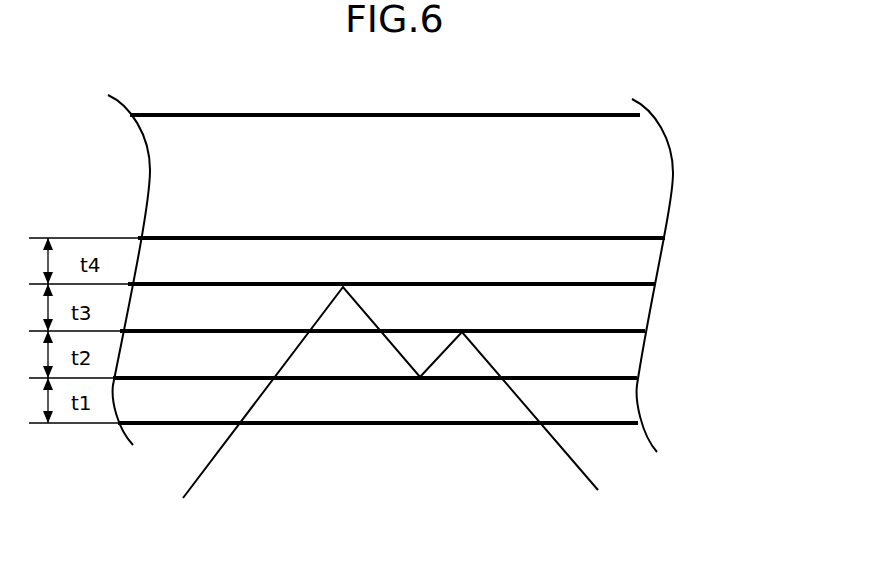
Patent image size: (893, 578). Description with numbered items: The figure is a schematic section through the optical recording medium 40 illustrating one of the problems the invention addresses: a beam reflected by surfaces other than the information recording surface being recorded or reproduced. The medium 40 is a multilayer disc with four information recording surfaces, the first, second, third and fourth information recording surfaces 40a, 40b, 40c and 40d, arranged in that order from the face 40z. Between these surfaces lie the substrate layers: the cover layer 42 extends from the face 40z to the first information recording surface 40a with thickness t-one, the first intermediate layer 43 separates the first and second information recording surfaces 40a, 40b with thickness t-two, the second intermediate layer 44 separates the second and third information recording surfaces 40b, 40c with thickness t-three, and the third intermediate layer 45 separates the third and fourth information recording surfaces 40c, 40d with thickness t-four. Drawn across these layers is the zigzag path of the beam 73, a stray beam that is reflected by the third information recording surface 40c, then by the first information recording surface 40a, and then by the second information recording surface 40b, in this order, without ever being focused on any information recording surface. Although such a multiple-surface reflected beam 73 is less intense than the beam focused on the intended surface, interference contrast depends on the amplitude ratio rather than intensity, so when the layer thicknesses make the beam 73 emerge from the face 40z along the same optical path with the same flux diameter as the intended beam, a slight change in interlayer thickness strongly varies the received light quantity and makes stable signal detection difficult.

The optical recording medium 40 is at (636, 91).
The fourth information recording surface 40d is at (665, 238).
The third information recording surface 40c is at (655, 284).
The second information recording surface 40b is at (645, 331).
The first information recording surface 40a is at (637, 378).
The face 40z is at (638, 423).
The third intermediate layer 45 is at (605, 259).
The second intermediate layer 44 is at (605, 312).
The first intermediate layer 43 is at (605, 352).
The cover layer 42 is at (605, 399).
The beam reflected by information recording surfaces 40c, 40a and 40b 73 is at (578, 466).